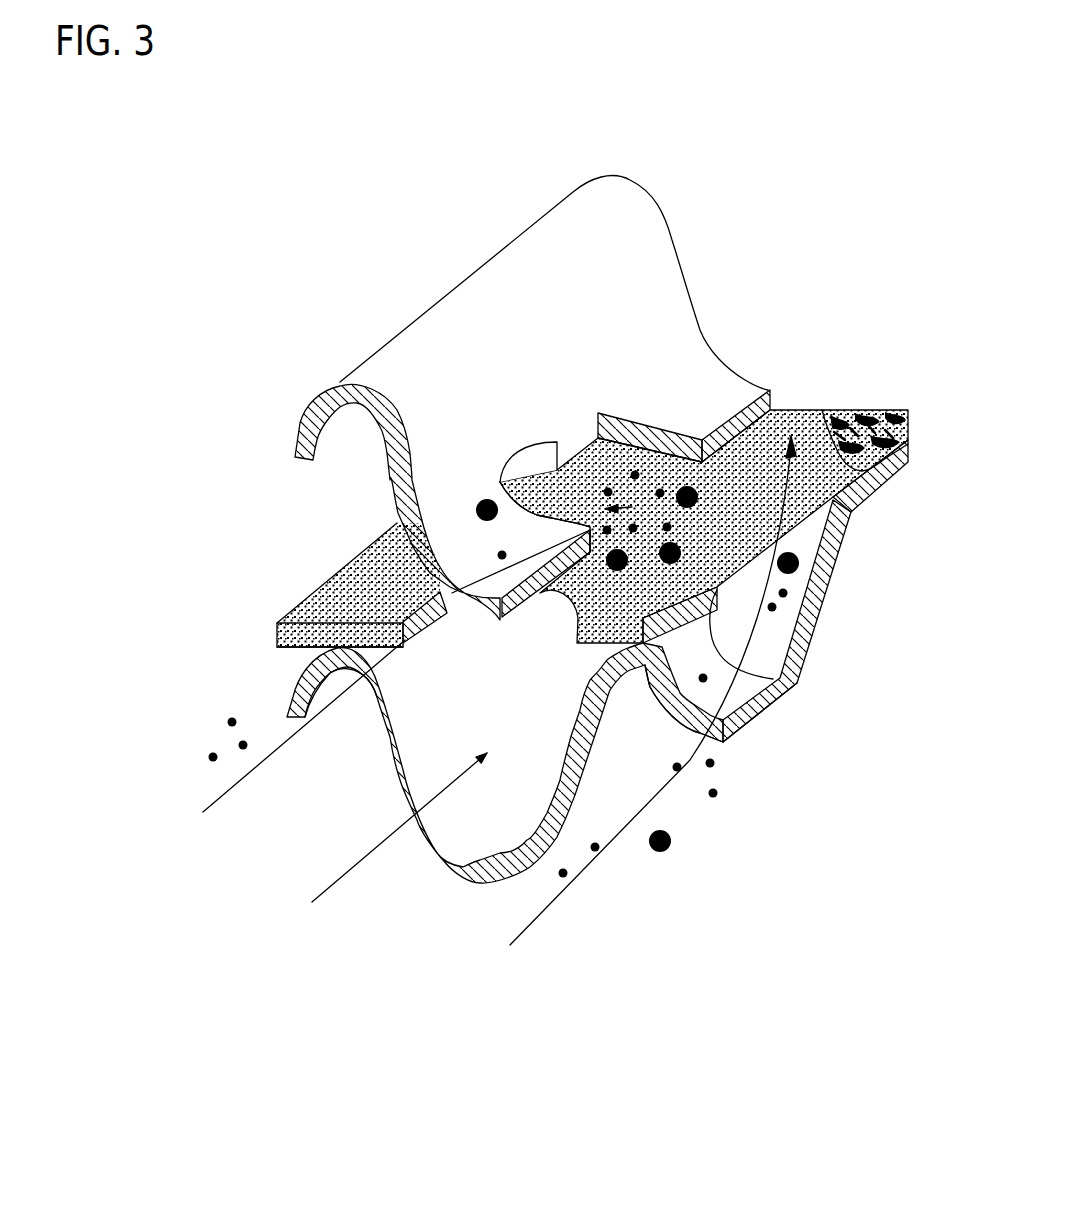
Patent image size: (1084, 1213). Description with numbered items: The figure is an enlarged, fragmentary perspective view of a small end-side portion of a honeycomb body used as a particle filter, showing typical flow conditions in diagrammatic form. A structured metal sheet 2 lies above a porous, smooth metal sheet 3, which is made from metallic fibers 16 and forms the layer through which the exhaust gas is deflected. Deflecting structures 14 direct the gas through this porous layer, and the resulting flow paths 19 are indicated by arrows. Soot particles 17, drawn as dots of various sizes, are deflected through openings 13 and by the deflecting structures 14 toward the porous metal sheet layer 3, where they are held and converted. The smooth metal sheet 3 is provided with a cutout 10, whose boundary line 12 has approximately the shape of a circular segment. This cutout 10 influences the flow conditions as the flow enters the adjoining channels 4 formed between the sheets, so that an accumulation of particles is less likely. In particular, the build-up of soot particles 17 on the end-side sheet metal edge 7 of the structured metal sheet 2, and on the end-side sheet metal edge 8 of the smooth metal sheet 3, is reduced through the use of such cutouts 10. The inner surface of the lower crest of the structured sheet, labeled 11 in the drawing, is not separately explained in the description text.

The structured metal sheet 2 is at (650, 243).
The smooth metal sheet 3 is at (333, 603).
The channels 4 is at (463, 730).
The end-side sheet metal edge 7 is at (377, 413).
The end-side sheet metal edge 8 is at (287, 650).
The cutout 10 is at (533, 627).
The inner surface of lower crest 11 is at (358, 687).
The boundary line 12 is at (430, 633).
The openings 13 is at (537, 470).
The deflecting structures 14 is at (763, 707).
The metallic fibers 16 is at (862, 410).
The soot particles 17 is at (797, 570).
The flow paths 19 is at (538, 925).